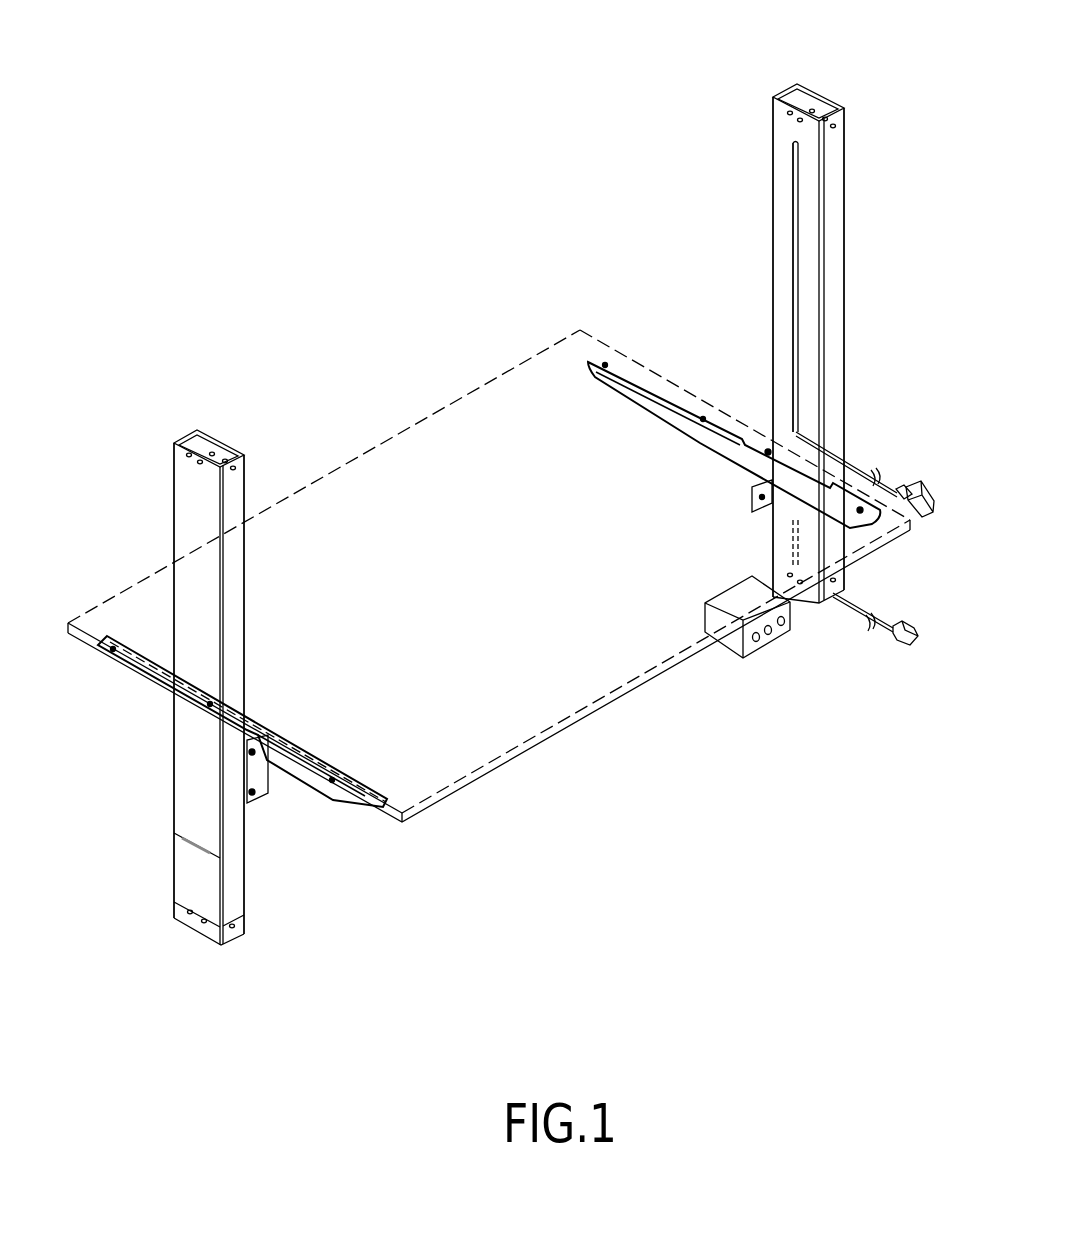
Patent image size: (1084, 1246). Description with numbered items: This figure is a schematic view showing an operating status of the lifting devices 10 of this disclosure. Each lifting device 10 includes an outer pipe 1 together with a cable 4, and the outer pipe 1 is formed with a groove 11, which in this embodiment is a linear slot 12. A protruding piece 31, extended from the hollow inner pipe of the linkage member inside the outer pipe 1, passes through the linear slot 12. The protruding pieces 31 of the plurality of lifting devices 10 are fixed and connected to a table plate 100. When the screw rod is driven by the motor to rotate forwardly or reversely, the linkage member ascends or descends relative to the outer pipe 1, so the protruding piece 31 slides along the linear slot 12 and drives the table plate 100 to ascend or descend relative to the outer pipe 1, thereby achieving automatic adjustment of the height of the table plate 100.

The table plate 100 is at (440, 428).
The outer pipe 1 is at (504, 514).
The lifting device 10 is at (757, 99).
The groove 11 is at (795, 175).
The linear slot 12 is at (795, 207).
The protruding piece 31 is at (781, 438).
The cable 4 is at (861, 465).